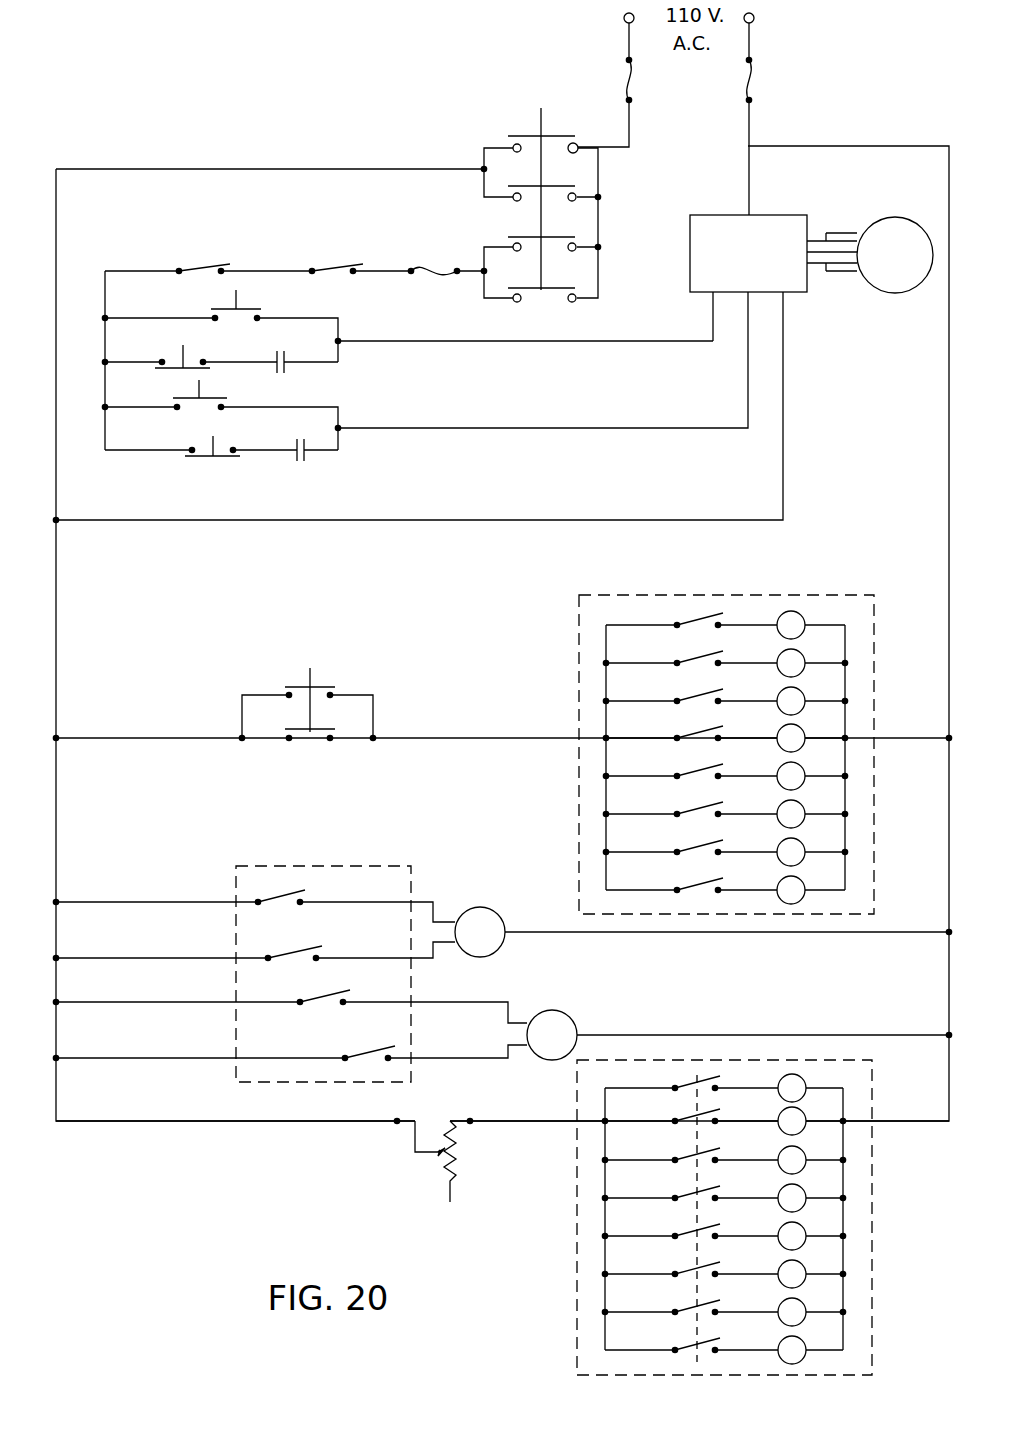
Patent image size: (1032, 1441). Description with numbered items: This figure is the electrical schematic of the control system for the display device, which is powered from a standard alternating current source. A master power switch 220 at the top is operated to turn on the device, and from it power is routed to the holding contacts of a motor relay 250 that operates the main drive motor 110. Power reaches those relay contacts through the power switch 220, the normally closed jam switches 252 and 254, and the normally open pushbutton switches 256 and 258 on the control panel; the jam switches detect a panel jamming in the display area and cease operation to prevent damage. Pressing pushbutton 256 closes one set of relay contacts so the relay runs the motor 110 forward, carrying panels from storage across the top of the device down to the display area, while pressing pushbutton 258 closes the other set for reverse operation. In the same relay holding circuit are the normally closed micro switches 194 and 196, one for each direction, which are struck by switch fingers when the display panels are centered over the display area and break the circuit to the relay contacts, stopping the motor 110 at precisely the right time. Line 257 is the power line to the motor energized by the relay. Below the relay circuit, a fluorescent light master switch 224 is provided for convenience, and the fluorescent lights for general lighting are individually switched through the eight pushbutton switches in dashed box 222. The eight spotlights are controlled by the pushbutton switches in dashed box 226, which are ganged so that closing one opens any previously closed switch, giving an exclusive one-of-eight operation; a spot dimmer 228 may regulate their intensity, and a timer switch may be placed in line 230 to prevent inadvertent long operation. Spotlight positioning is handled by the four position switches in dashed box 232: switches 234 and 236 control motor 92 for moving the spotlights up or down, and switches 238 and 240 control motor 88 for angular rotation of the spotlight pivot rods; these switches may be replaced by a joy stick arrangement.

The main drive motor 110 is at (895, 294).
The motor relay 250 is at (790, 214).
The master power switch 220 is at (516, 234).
The jam switch 252 is at (196, 268).
The jam switch 254 is at (335, 267).
The pushbutton switch 256 is at (223, 308).
The micro switch 194 is at (178, 360).
The pushbutton switch 258 is at (206, 402).
The micro switch 196 is at (221, 457).
The power line 257 is at (370, 522).
The dashed box of fluorescent light pushbutton switches 222 is at (579, 625).
The fluorescent light master switch 224 is at (327, 686).
The dashed box of position switches 232 is at (291, 939).
The position switch 234 is at (287, 893).
The position switch 236 is at (303, 948).
The position switch 238 is at (323, 993).
The position switch 240 is at (370, 1050).
The motor 92 is at (490, 908).
The motor 88 is at (570, 1013).
The dashed box of spotlight pushbutton switches 226 is at (575, 1165).
The spot dimmer 228 is at (440, 1160).
The line 230 is at (207, 1123).